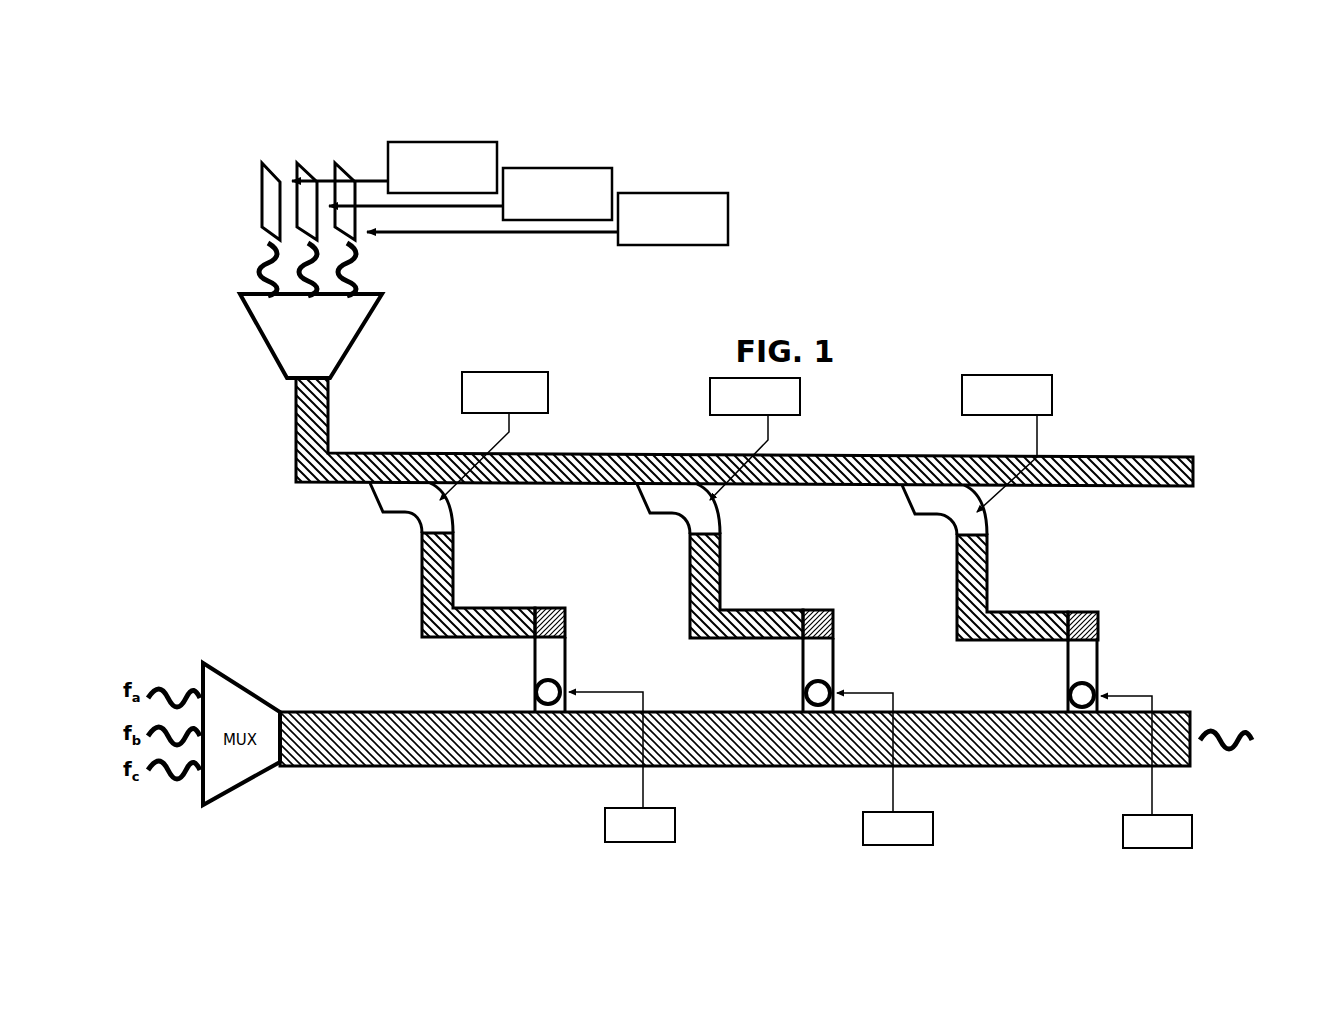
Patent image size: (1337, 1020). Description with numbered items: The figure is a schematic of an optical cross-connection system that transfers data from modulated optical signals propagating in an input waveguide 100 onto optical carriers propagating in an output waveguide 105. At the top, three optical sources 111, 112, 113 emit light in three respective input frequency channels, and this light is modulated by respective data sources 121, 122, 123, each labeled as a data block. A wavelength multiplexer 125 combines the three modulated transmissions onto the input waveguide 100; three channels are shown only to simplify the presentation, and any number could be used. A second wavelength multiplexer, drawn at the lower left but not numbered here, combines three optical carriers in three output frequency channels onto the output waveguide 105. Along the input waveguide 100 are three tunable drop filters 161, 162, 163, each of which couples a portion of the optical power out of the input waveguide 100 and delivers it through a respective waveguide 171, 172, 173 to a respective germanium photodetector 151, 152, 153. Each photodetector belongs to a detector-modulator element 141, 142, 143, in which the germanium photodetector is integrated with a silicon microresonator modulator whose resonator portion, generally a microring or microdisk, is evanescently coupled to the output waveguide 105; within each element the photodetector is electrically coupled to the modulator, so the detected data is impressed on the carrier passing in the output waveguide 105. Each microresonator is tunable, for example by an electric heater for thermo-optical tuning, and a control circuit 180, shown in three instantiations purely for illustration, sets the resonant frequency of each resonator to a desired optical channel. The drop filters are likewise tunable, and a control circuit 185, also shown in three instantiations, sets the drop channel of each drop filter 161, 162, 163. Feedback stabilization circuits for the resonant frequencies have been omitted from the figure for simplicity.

The input waveguide 100 is at (1103, 457).
The output waveguide 105 is at (1175, 713).
The optical source 111 is at (257, 193).
The optical source 112 is at (258, 217).
The optical source 113 is at (350, 175).
The data source 121 is at (478, 142).
The data source 122 is at (583, 168).
The data source 123 is at (700, 193).
The wavelength multiplexer 125 is at (362, 330).
The detector-modulator element 141 is at (570, 637).
The detector-modulator element 142 is at (847, 640).
The detector-modulator element 143 is at (1115, 640).
The germanium photodetector 151 is at (566, 609).
The germanium photodetector 152 is at (835, 612).
The germanium photodetector 153 is at (1100, 612).
The tunable drop filter 161 is at (365, 505).
The tunable drop filter 162 is at (635, 500).
The tunable drop filter 163 is at (905, 503).
The waveguide 171 is at (420, 594).
The waveguide 172 is at (735, 640).
The waveguide 173 is at (1010, 660).
The control circuit 180 is at (648, 845).
The control circuit 185 is at (518, 370).